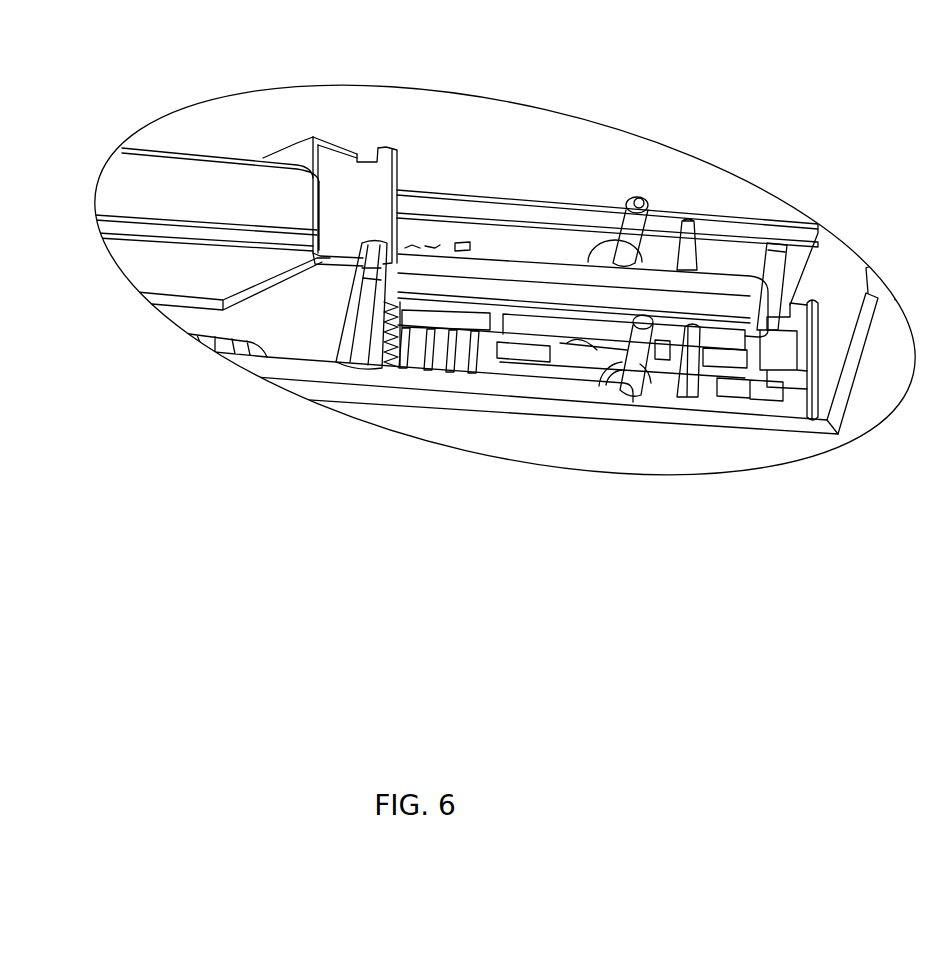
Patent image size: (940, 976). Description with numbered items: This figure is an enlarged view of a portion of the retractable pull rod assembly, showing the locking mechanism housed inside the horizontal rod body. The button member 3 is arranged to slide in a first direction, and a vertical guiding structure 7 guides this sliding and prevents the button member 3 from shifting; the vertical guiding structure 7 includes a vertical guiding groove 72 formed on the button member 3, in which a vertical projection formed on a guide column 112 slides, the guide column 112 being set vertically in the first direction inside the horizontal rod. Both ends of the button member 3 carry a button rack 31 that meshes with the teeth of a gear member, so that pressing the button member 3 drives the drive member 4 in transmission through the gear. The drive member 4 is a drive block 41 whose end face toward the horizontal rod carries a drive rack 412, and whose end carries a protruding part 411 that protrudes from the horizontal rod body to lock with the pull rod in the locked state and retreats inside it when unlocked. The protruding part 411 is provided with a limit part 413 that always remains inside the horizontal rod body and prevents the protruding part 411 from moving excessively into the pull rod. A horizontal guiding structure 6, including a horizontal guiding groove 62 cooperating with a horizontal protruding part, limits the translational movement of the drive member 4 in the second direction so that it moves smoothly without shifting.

The button member 3 is at (188, 322).
The drive member 4 is at (522, 270).
The horizontal guiding structure 6 is at (437, 312).
The vertical guiding structure 7 is at (371, 158).
The button rack 31 is at (383, 368).
The drive block 41 is at (577, 268).
The horizontal guiding groove 62 is at (463, 318).
The vertical guiding groove 72 is at (380, 152).
The guide column 112 is at (357, 337).
The protruding part 411 is at (773, 363).
The drive rack 412 is at (578, 338).
The limit part 413 is at (812, 410).